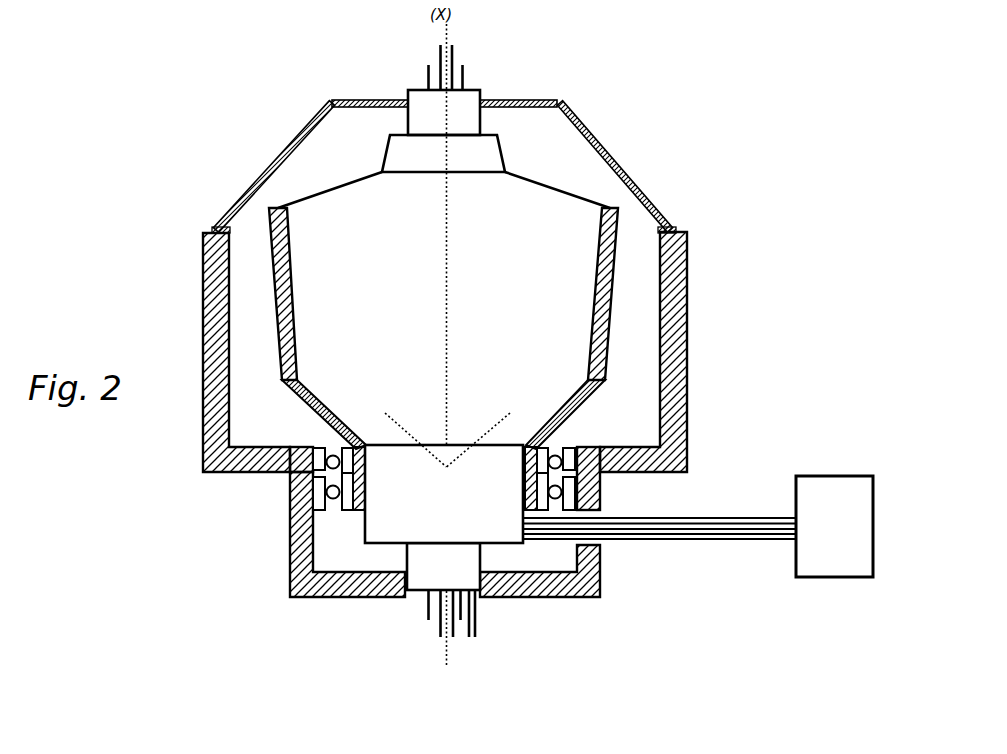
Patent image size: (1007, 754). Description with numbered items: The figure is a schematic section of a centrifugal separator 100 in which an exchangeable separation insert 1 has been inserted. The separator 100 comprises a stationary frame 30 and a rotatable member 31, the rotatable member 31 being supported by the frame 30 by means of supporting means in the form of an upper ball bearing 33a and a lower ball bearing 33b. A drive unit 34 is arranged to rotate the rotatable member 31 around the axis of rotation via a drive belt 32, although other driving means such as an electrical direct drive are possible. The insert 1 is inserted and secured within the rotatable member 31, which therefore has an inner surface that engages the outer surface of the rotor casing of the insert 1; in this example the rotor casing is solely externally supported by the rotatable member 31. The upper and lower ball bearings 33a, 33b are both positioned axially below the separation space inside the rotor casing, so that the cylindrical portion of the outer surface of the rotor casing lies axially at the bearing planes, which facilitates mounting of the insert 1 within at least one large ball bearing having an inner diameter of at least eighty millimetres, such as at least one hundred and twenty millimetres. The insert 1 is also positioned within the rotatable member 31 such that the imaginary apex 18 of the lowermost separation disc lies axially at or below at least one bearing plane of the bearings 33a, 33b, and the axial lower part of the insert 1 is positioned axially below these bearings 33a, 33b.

The centrifugal separator 100 is at (192, 144).
The exchangeable separation insert 1 is at (355, 180).
The stationary frame 30 is at (680, 267).
The rotatable member 31 is at (270, 303).
The upper ball bearing 33a is at (292, 473).
The lower ball bearing 33b is at (297, 502).
The imaginary apex 18 is at (446, 477).
The drive belt 32 is at (717, 517).
The drive unit 34 is at (834, 526).